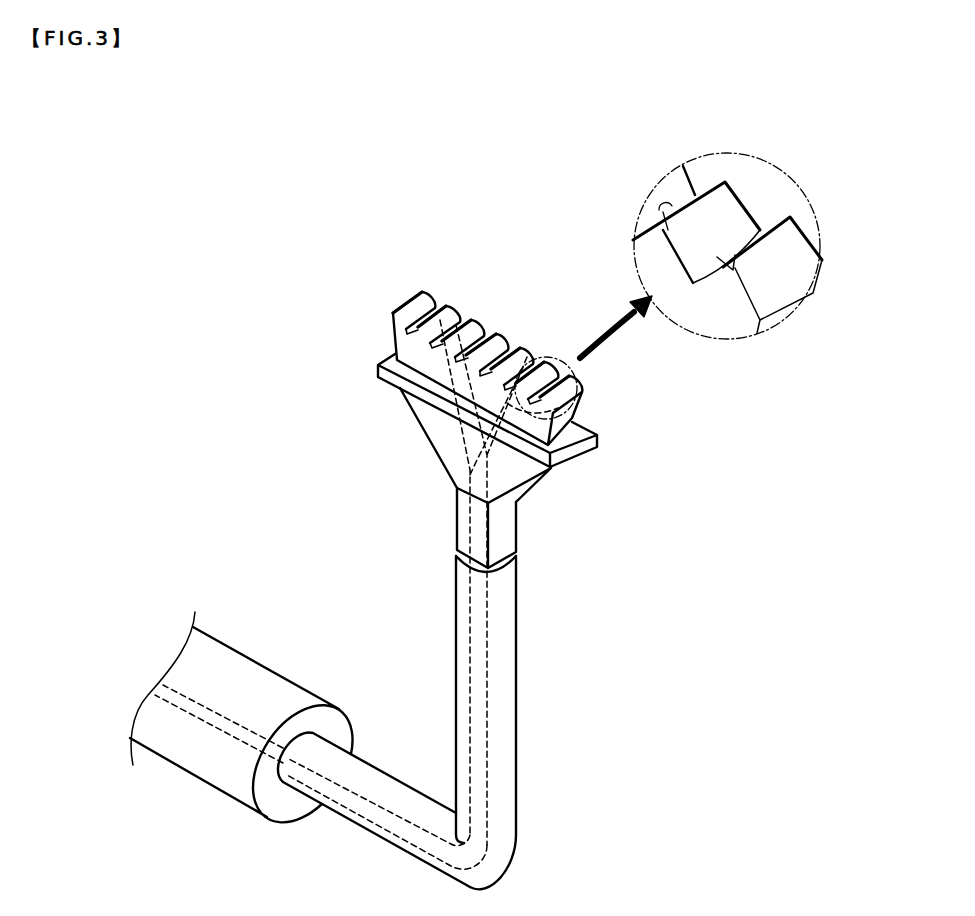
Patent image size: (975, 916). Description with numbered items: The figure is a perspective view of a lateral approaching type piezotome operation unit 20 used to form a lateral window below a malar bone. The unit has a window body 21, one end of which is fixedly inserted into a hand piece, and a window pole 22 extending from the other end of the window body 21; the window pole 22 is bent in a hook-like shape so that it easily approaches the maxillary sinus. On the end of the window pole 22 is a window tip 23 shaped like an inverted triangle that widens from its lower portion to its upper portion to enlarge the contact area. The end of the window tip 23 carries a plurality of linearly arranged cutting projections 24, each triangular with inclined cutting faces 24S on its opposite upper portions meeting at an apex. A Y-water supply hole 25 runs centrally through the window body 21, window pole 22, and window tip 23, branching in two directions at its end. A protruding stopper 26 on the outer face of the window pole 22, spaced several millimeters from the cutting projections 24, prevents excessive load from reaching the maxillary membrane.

The lateral approaching type piezotome operation unit 20 is at (653, 452).
The window body 21 is at (218, 655).
The window pole 22 is at (505, 712).
The window tip 23 is at (407, 343).
The cutting projections 24 is at (455, 327).
The inclined cutting faces 24S is at (403, 306).
The Y-water supply hole 25 is at (470, 652).
The stopper 26 is at (403, 383).